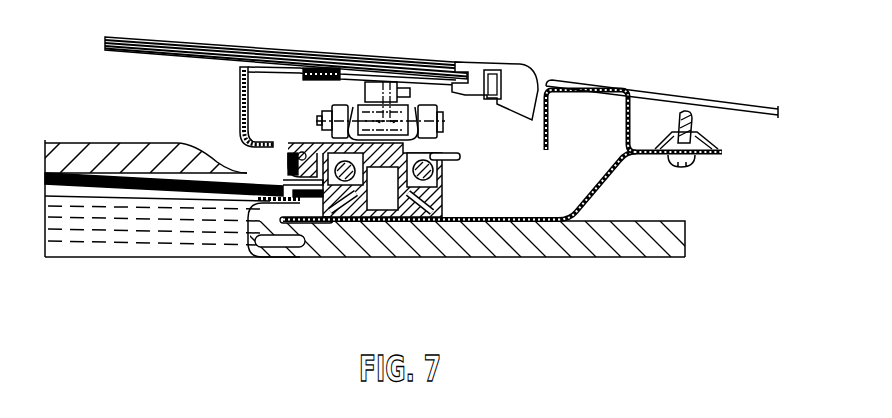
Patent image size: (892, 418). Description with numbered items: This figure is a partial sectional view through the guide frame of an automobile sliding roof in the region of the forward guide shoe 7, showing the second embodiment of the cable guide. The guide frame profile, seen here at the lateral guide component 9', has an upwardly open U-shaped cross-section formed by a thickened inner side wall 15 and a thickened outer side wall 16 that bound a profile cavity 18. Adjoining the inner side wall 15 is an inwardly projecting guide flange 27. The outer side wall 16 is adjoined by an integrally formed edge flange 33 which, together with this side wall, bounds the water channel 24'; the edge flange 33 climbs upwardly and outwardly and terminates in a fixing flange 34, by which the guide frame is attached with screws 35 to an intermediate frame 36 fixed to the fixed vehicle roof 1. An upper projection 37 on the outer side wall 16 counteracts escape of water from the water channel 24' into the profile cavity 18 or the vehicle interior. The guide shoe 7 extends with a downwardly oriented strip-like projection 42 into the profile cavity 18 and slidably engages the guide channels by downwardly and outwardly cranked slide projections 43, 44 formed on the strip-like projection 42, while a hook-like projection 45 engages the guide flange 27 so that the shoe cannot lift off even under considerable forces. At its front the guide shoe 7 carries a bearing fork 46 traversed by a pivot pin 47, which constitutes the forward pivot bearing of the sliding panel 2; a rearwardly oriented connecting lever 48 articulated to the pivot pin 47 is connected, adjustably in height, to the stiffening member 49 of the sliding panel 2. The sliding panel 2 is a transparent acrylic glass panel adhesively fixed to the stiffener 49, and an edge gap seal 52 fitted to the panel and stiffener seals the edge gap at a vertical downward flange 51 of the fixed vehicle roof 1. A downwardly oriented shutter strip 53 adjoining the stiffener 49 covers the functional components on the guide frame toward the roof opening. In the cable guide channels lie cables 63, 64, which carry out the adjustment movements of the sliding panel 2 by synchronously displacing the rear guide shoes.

The fixed vehicle roof 1 is at (669, 92).
The sliding panel 2 is at (211, 48).
The forward guide shoe 7 is at (309, 137).
The lateral guide component 9' is at (463, 129).
The inner side wall 15 is at (352, 225).
The outer side wall 16 is at (442, 197).
The profile cavity 18 is at (381, 226).
The water channel 24' is at (523, 188).
The guide flange 27 is at (300, 143).
The edge flange 33 is at (590, 193).
The fixing flange 34 is at (655, 158).
The screws 35 is at (694, 163).
The intermediate frame 36 is at (623, 118).
The upper projection 37 is at (462, 153).
The strip-like projection 42 is at (382, 188).
The slide projection 43 is at (342, 200).
The slide projection 44 is at (420, 225).
The hook-like projection 45 is at (298, 157).
The bearing fork 46 is at (340, 103).
The pivot pin 47 is at (318, 118).
The connecting lever 48 is at (385, 80).
The stiffening member 49 is at (292, 62).
The vertical downward flange 51 is at (541, 127).
The edge gap seal 52 is at (526, 78).
The shutter strip 53 is at (240, 110).
The cable 63 is at (312, 207).
The cable 64 is at (447, 170).